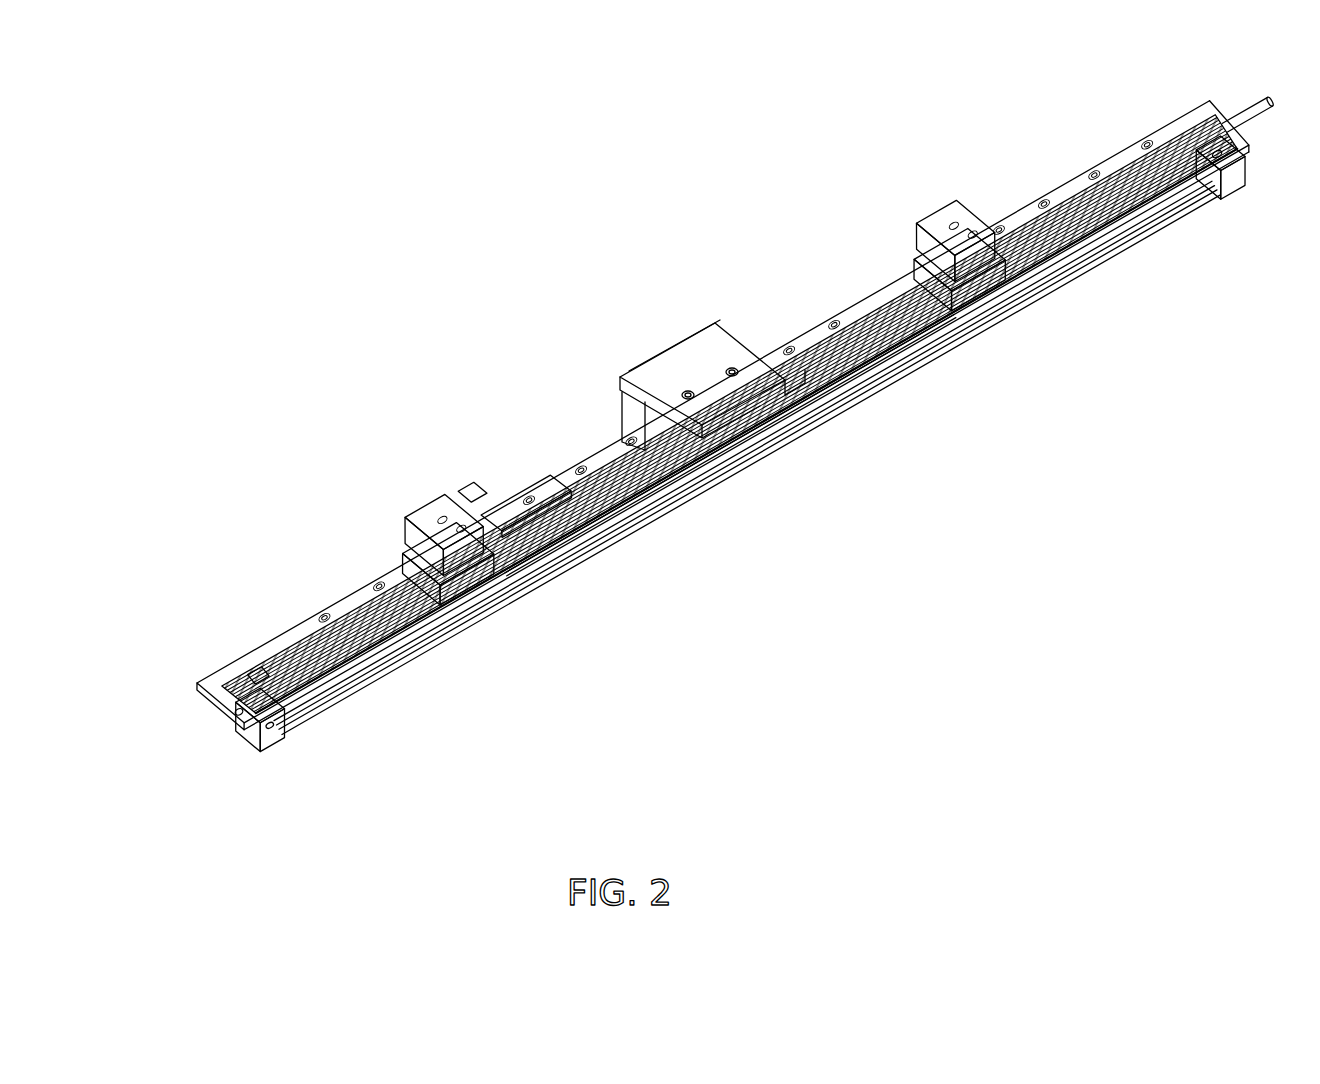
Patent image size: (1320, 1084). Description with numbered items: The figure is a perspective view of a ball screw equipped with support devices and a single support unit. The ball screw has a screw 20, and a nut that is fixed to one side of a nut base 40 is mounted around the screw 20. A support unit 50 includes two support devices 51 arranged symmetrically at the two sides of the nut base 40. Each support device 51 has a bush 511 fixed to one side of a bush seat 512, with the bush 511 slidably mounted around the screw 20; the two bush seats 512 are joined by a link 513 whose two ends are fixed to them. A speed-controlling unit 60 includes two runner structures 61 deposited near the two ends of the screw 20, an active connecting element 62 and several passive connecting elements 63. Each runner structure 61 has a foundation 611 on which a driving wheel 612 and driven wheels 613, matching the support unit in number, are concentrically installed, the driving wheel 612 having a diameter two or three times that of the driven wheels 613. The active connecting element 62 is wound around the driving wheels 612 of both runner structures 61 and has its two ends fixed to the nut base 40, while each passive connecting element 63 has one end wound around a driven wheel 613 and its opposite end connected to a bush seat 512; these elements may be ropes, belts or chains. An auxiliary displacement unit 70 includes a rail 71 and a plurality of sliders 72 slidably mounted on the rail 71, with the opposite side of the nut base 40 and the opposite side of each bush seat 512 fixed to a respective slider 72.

The screw 20 is at (1133, 178).
The nut base 40 is at (743, 326).
The support unit 50 is at (730, 409).
The support device 51 is at (730, 409).
The bush 511 is at (495, 580).
The bush seat 512 is at (443, 520).
The link 513 is at (860, 370).
The speed-controlling unit 60 is at (715, 465).
The runner structure 61 is at (265, 732).
The foundation 611 is at (270, 725).
The driving wheel 612 is at (236, 712).
The driven wheel 613 is at (257, 676).
The active connecting element 62 is at (345, 690).
The passive connecting element 63 is at (400, 645).
The auxiliary displacement unit 70 is at (512, 458).
The rail 71 is at (553, 483).
The slider 72 is at (474, 467).